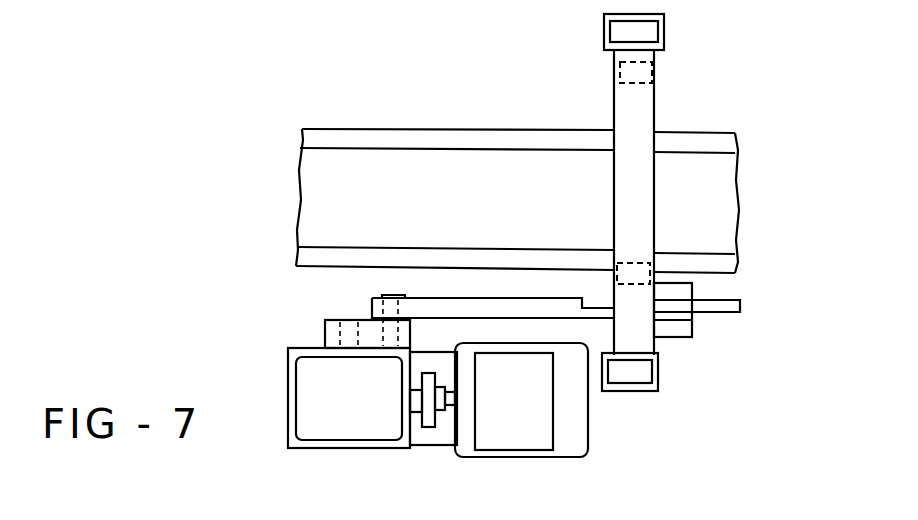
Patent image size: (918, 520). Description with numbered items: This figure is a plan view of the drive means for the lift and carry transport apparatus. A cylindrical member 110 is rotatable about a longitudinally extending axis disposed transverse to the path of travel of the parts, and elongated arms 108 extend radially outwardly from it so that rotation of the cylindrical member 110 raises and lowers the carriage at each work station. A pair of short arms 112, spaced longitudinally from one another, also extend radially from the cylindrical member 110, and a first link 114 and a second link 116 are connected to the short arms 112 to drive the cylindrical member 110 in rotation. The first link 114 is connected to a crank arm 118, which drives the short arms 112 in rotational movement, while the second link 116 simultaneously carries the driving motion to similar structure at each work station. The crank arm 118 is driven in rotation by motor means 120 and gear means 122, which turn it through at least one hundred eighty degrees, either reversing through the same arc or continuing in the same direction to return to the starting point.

The elongated arm 108 is at (648, 86).
The cylindrical member 110 is at (614, 111).
The short arm 112 is at (665, 285).
The first link 114 is at (455, 297).
The second link 116 is at (726, 312).
The crank arm 118 is at (412, 338).
The motor means 120 is at (540, 452).
The gear means 122 is at (372, 446).